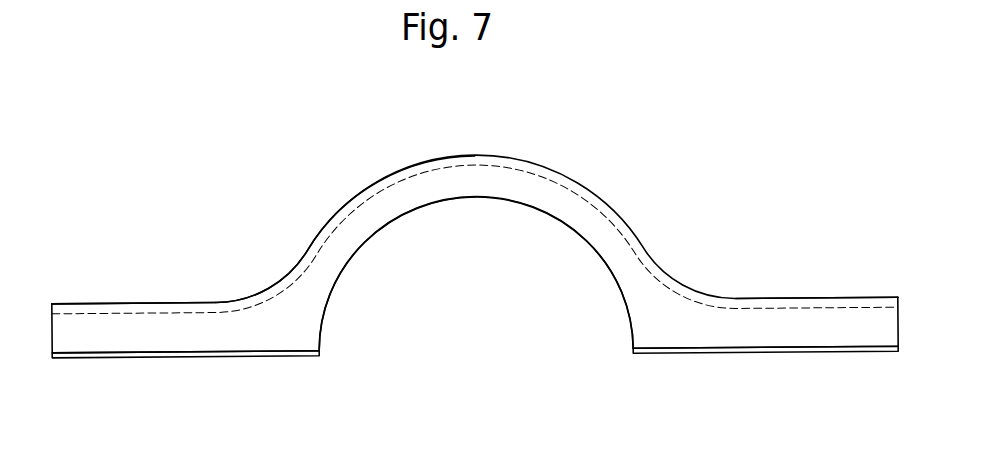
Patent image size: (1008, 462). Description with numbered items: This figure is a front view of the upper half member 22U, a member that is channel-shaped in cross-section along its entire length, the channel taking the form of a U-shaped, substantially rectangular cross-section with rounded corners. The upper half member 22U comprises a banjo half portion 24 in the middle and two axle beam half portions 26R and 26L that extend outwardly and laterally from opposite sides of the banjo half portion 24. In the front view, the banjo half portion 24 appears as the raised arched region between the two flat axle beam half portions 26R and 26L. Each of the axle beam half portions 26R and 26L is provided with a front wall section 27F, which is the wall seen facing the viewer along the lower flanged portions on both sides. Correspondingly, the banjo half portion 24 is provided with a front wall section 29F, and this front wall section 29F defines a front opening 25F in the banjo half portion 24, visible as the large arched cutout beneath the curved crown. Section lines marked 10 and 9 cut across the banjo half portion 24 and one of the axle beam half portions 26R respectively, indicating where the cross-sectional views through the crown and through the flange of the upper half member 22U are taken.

The upper half member 22U is at (343, 168).
The banjo half portion 24 is at (326, 225).
The axle beam half portion 26L is at (120, 303).
The axle beam half portion 26R is at (838, 296).
The front wall section 29F is at (375, 224).
The front opening 25F is at (573, 230).
The front wall section 27F is at (139, 346).
The section line 10- 10 is at (473, 142).
The section line 9- 9 is at (783, 292).